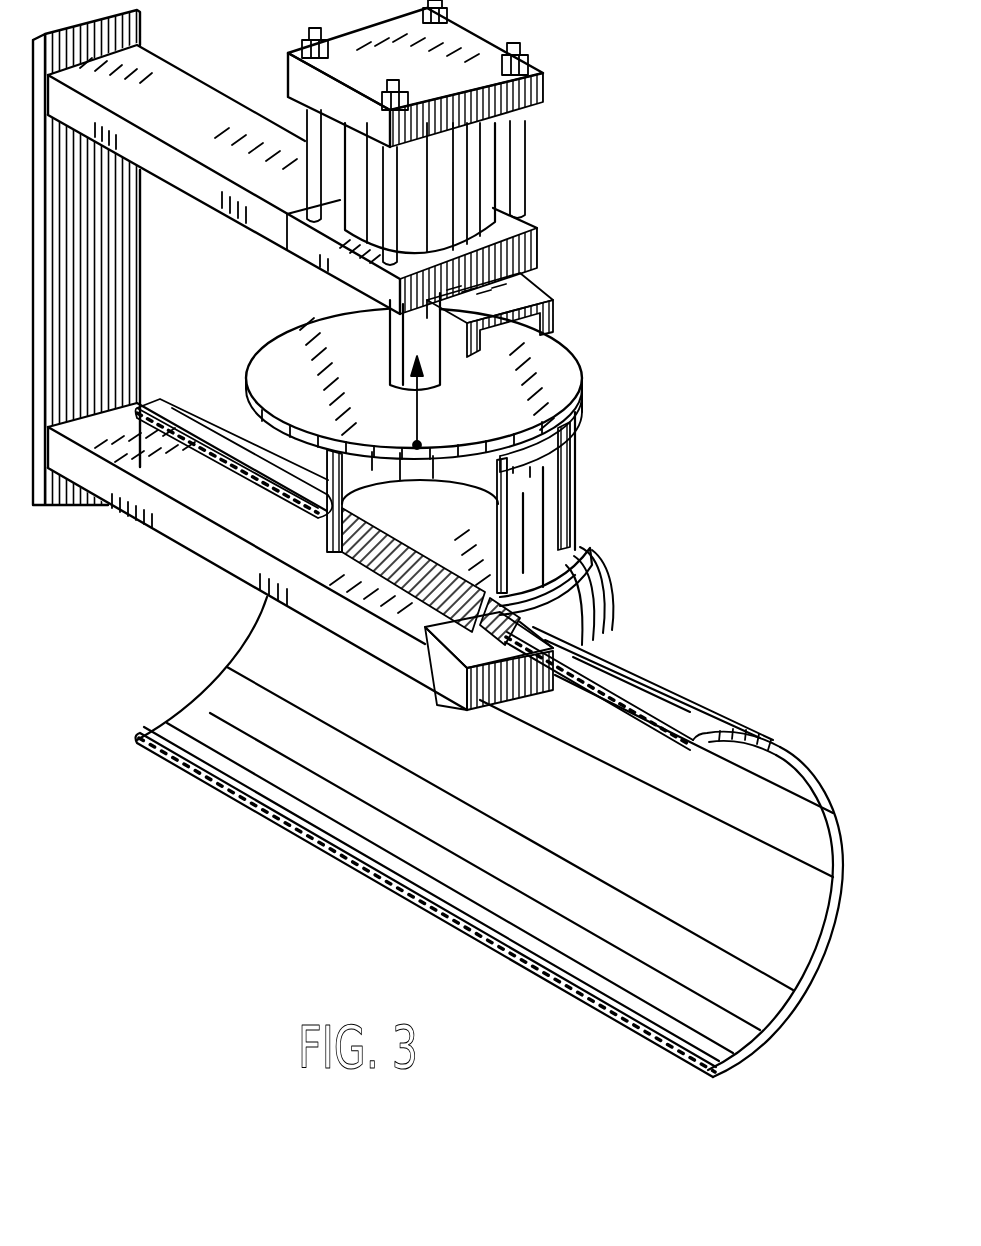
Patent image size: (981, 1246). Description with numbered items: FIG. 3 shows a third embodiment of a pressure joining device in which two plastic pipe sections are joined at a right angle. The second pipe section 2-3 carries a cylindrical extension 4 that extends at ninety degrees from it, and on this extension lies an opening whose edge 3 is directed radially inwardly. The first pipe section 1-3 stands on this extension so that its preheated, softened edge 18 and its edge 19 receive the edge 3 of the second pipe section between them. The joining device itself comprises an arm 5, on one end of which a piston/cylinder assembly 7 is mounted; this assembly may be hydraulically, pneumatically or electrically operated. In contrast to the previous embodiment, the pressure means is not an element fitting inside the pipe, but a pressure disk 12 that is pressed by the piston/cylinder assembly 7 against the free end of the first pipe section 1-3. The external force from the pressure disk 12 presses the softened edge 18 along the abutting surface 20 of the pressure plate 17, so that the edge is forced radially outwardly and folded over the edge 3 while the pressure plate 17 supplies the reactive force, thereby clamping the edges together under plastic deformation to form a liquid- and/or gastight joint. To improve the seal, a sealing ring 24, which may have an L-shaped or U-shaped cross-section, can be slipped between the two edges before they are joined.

The piston/cylinder assembly 7 is at (545, 88).
The pressure disk 12 is at (562, 376).
The edge of the first pipe section 19 is at (340, 508).
The pressure plate 17 is at (443, 513).
The first pipe section 1-3 is at (548, 512).
The edge of the opening 3 is at (303, 508).
The arm 5 is at (180, 525).
The softened edge of the first pipe section 18 is at (340, 582).
The cylindrical extension 4 is at (597, 607).
The second pipe section 2-3 is at (653, 700).
The abutting surface 20 is at (483, 642).
The sealing ring 24 is at (510, 660).